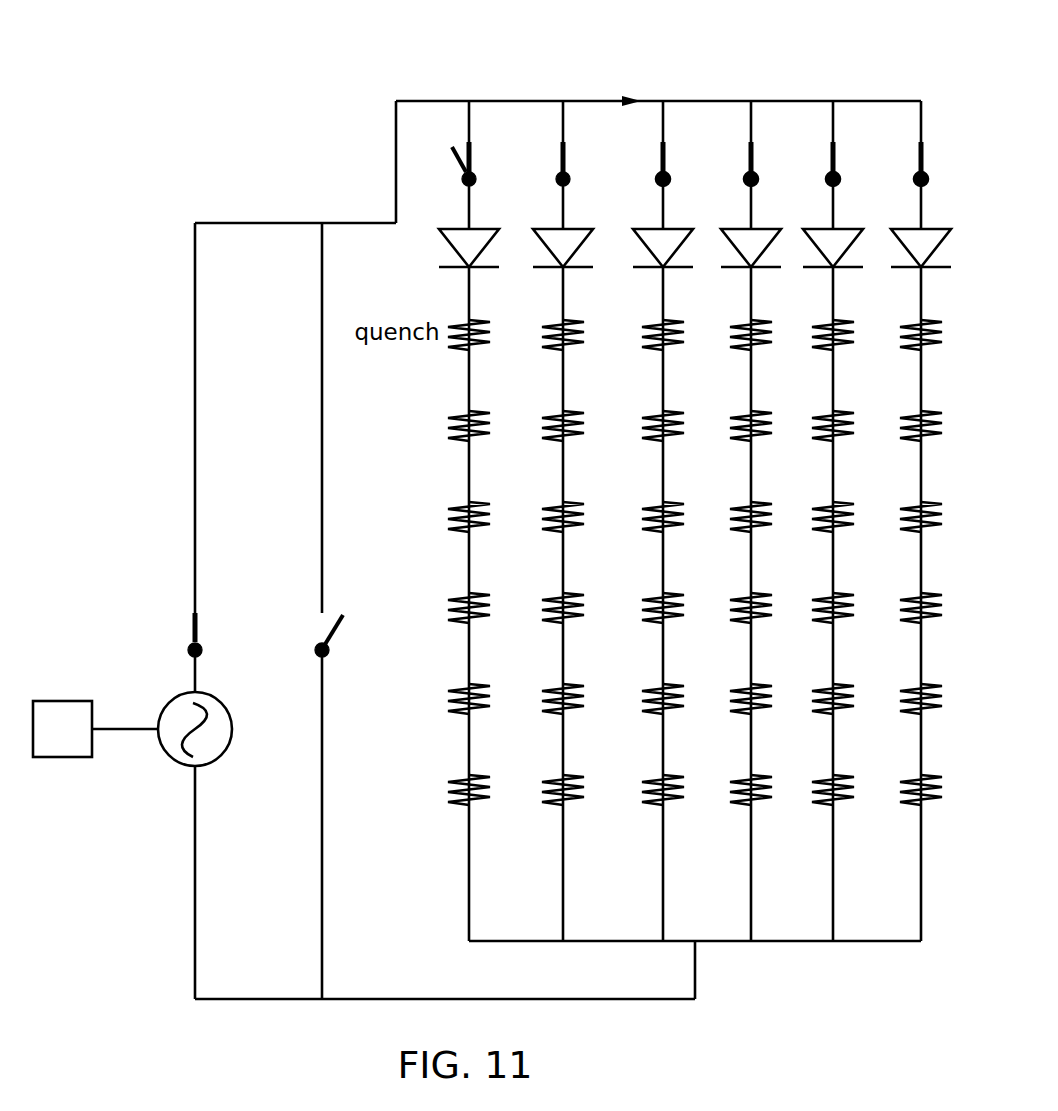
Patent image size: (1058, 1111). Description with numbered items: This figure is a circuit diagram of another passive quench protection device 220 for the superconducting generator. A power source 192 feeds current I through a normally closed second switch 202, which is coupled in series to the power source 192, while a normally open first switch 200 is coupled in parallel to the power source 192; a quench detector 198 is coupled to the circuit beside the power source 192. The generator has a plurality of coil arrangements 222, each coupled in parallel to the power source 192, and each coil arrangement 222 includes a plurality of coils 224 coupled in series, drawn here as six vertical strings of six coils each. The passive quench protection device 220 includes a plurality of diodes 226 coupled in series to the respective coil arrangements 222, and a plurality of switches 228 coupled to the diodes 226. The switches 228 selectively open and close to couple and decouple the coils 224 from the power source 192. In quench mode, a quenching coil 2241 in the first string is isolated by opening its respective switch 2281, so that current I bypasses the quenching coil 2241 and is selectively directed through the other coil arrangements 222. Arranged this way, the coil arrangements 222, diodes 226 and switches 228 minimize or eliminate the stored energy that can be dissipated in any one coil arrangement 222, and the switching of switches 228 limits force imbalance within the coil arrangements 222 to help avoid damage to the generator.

The passive quench protection device 220 is at (256, 146).
The respective switch 2281 is at (452, 158).
The switches 228 is at (556, 160).
The diodes 226 is at (588, 225).
The quenching coil 2241 is at (462, 324).
The coils 224 is at (850, 803).
The coil arrangements 222 is at (640, 852).
The second switch 202 is at (200, 632).
The first switch 200 is at (348, 622).
The quench detector 198 is at (65, 701).
The power source 192 is at (170, 760).